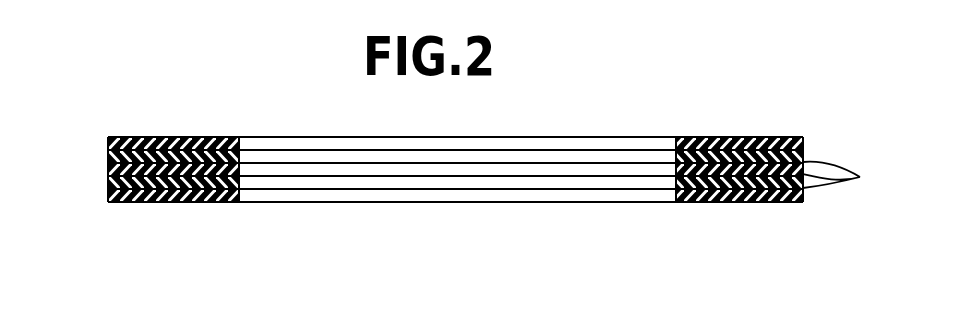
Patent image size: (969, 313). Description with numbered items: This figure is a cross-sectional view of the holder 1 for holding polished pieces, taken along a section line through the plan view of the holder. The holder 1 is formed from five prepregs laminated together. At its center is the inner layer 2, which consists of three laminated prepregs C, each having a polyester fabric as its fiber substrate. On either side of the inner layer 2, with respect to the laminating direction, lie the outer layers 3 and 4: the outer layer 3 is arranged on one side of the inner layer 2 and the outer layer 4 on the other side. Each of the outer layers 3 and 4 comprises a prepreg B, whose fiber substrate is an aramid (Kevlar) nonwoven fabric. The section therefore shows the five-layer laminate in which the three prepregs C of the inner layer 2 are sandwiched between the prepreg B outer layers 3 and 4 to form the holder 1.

The holder 1 is at (706, 130).
The inner layer 2 is at (108, 170).
The outer layer 3 is at (108, 139).
The outer layer 4 is at (108, 198).
The prepreg B is at (803, 139).
The prepregs C is at (845, 177).